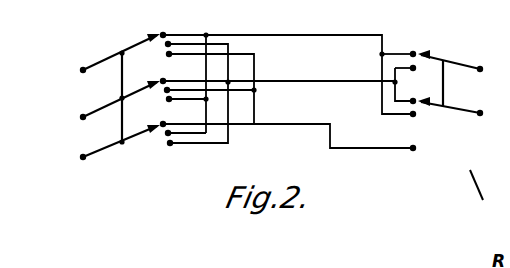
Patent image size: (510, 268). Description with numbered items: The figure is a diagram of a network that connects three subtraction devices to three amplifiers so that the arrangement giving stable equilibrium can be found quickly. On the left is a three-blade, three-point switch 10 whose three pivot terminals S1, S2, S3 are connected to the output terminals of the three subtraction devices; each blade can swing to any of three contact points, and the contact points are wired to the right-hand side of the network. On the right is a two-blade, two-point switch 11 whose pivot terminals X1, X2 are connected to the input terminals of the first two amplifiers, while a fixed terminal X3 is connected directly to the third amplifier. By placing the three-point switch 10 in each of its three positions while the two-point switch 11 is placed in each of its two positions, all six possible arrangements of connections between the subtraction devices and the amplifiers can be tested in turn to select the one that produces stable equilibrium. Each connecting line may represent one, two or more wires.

The three-pole switch bank 10 is at (128, 94).
The two-pole switch 11 is at (449, 76).
The pivot terminal S1 is at (66, 70).
The pivot terminal S2 is at (66, 116).
The pivot terminal S3 is at (69, 156).
The pivot terminal X1 is at (492, 69).
The pivot terminal X2 is at (492, 112).
The fixed terminal X3 is at (426, 149).